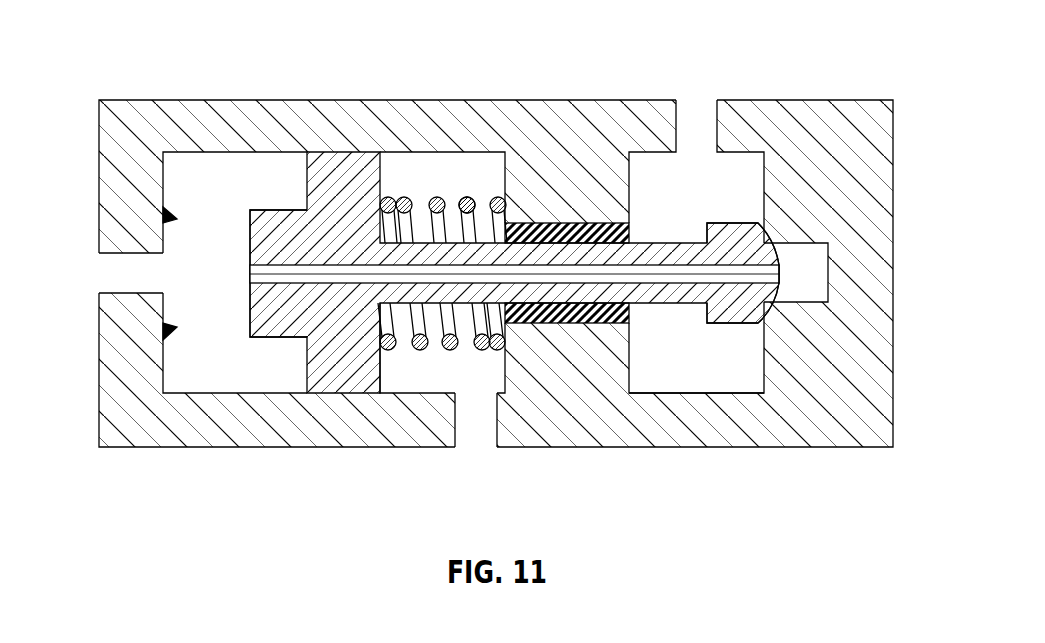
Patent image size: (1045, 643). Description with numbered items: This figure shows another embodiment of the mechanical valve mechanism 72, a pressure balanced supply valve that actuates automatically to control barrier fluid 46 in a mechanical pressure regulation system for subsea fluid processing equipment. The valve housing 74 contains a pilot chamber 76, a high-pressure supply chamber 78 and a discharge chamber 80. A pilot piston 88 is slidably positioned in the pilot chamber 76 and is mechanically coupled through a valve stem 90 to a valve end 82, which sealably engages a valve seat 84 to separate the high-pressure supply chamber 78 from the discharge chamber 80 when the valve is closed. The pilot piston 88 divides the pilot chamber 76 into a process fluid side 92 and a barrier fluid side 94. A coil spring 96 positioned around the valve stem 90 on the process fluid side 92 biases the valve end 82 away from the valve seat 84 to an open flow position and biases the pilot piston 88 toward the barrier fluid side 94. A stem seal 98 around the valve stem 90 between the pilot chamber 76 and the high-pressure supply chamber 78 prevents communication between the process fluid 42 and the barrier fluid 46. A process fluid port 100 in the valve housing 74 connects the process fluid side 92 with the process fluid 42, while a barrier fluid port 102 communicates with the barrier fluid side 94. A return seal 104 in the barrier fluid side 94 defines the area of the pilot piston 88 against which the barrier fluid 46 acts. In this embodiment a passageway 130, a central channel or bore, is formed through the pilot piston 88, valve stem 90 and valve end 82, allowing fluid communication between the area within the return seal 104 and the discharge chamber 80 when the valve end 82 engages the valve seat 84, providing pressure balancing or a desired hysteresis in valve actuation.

The valve mechanism 72 is at (781, 97).
The valve housing 74 is at (137, 100).
The pilot chamber 76 is at (418, 156).
The high-pressure supply chamber 78 is at (728, 373).
The discharge chamber 80 is at (817, 302).
The valve end 82 is at (765, 253).
The valve seat 84 is at (763, 252).
The pilot piston 88 is at (342, 183).
The valve stem 90 is at (673, 243).
The process fluid side 92 is at (434, 159).
The barrier fluid side 94 is at (197, 161).
The spring 96 is at (468, 196).
The seal 98 is at (573, 223).
The process fluid port 100 is at (498, 424).
The barrier fluid port 102 is at (117, 298).
The return seal 104 is at (172, 218).
The passageway 130 is at (678, 274).
The process fluid 42 is at (432, 373).
The barrier fluid 46 is at (233, 172).